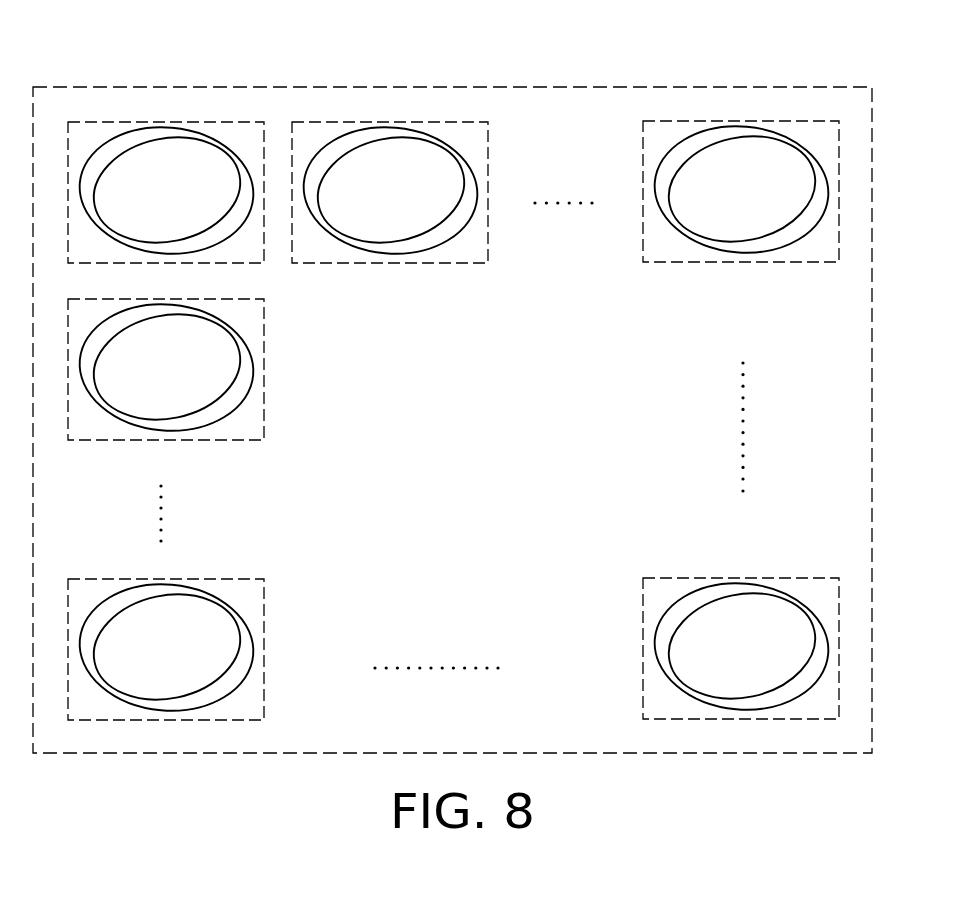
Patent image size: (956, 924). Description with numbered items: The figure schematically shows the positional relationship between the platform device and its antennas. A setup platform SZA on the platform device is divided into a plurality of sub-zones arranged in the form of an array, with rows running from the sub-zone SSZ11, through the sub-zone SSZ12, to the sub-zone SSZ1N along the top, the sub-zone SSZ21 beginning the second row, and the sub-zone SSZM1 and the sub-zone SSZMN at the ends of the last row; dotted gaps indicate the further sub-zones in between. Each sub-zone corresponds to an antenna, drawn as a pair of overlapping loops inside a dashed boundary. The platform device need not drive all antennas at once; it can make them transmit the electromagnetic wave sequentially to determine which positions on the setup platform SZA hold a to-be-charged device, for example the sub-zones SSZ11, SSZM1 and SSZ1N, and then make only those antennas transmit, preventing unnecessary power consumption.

The setup platform SZA is at (840, 87).
The sub-zone SSZ11 is at (233, 119).
The sub-zone SSZ12 is at (455, 118).
The sub-zone SSZ1N is at (780, 118).
The sub-zone SSZ21 is at (233, 297).
The sub-zone SSZM1 is at (233, 578).
The sub-zone SSZMN is at (780, 577).